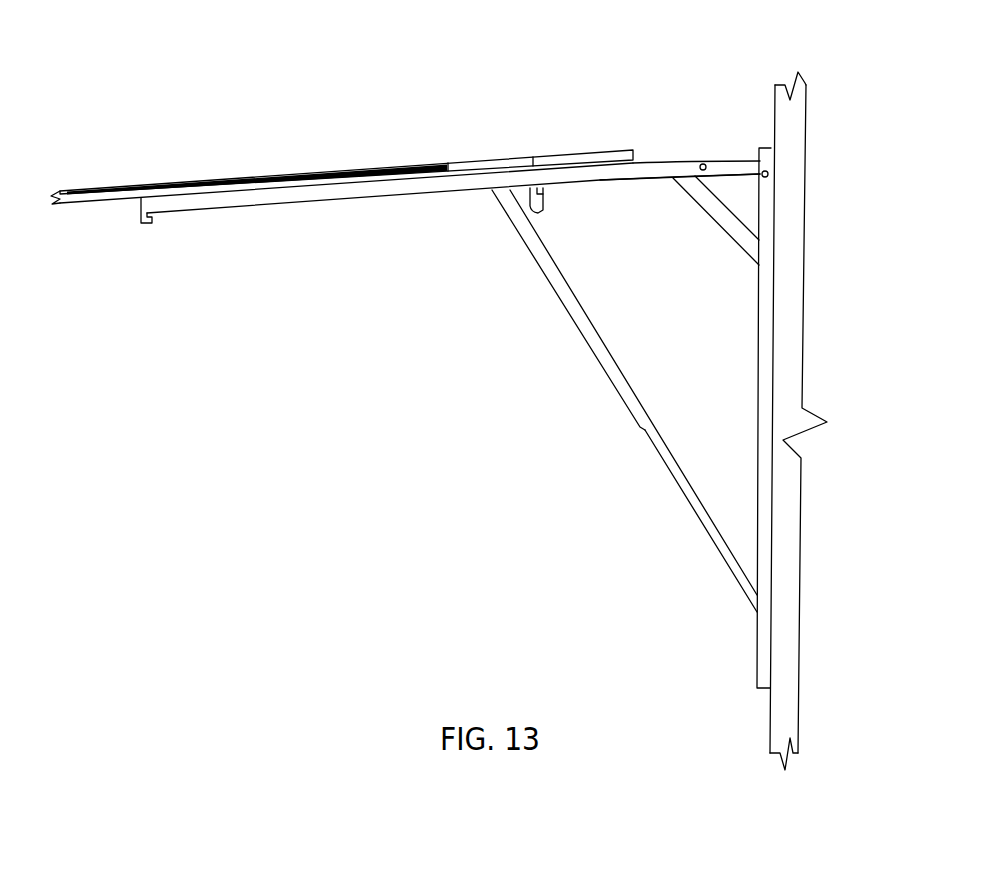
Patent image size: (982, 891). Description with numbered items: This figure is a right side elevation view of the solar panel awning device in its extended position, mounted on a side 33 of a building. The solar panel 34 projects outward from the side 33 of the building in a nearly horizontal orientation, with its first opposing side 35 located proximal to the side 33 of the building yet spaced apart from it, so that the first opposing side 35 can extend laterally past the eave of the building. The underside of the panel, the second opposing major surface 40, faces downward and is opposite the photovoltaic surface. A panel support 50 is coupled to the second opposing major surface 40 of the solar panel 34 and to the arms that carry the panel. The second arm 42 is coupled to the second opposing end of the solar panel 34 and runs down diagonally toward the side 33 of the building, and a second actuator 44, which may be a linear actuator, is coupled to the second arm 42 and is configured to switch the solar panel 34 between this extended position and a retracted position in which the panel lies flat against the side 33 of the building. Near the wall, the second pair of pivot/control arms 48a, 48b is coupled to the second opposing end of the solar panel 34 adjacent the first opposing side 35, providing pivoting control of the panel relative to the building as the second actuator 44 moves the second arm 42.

The side of building 33 is at (783, 291).
The solar panel 34 is at (362, 164).
The first opposing side 35 is at (637, 158).
The second opposing major surface 40 is at (120, 212).
The second arm 42 is at (627, 391).
The second actuator 44 is at (720, 545).
The pivot/control arm 48a is at (780, 117).
The pivot/control arm 48b is at (736, 231).
The panel support 50 is at (213, 203).